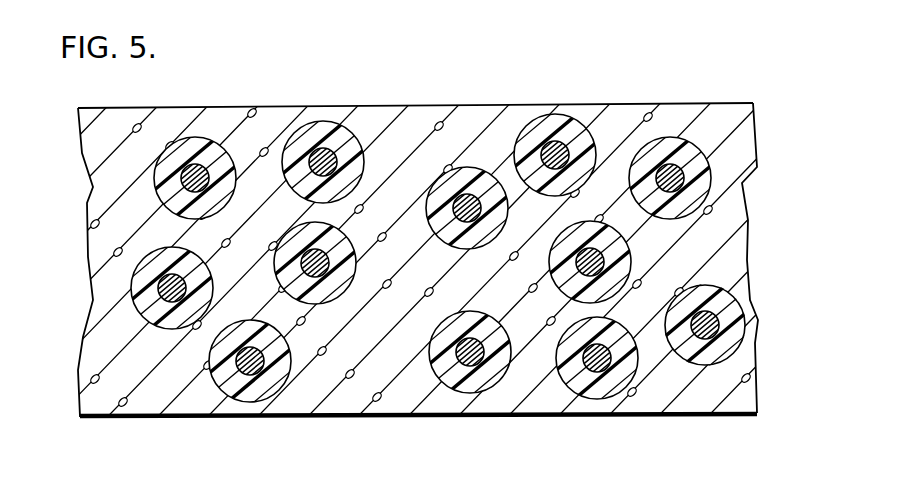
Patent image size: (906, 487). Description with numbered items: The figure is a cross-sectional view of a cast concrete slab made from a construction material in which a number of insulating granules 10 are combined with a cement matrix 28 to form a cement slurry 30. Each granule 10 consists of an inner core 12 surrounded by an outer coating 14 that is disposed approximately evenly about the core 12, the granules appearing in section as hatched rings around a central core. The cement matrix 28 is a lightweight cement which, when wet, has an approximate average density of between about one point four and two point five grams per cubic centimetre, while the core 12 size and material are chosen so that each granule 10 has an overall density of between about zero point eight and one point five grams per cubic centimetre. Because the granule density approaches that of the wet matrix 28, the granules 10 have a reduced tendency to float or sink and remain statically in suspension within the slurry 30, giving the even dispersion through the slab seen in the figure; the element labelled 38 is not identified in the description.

The insulating granule 10 is at (362, 157).
The inner core 12 is at (230, 165).
The outer coating 14 is at (222, 192).
The cement matrix 28 is at (530, 291).
The cement slurry 30 is at (230, 103).
The panel body 38 is at (568, 102).